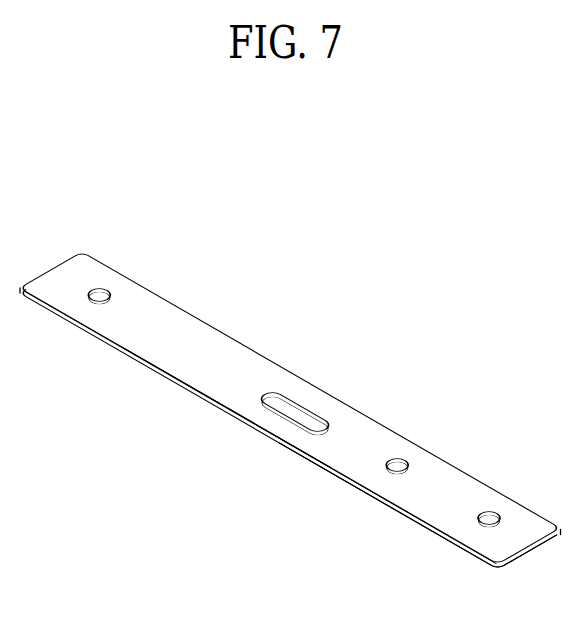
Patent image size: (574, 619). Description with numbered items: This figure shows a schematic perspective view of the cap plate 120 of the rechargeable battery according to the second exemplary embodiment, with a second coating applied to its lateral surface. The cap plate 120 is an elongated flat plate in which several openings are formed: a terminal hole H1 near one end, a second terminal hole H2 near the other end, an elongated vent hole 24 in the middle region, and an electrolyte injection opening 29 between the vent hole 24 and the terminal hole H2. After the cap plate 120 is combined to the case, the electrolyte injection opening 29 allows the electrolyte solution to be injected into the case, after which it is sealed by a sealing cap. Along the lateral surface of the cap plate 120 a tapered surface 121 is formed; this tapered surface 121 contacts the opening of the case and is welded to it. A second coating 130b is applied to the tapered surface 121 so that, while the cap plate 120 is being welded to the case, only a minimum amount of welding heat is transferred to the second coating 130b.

The cap plate 120 is at (386, 393).
The tapered surface 121 is at (472, 551).
The second coating 130b is at (268, 438).
The vent hole 24 is at (300, 403).
The electrolyte injection opening 29 is at (398, 459).
The terminal hole H1 is at (101, 289).
The terminal hole H2 is at (491, 512).